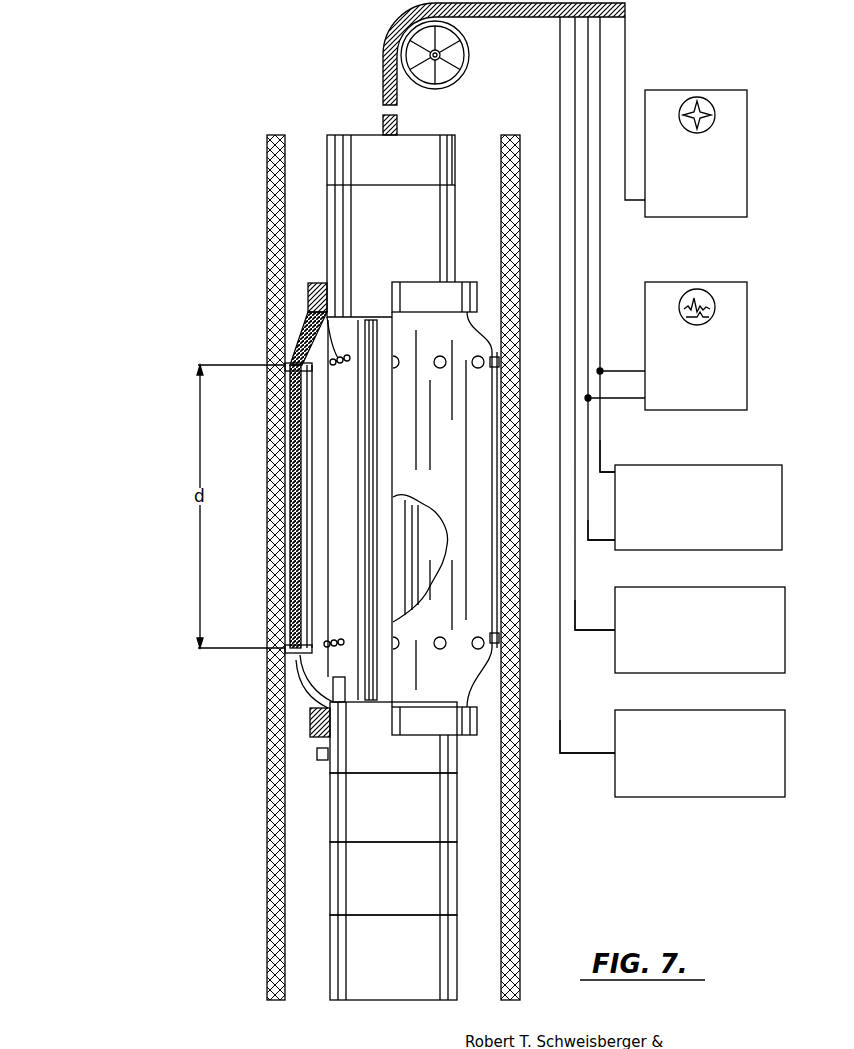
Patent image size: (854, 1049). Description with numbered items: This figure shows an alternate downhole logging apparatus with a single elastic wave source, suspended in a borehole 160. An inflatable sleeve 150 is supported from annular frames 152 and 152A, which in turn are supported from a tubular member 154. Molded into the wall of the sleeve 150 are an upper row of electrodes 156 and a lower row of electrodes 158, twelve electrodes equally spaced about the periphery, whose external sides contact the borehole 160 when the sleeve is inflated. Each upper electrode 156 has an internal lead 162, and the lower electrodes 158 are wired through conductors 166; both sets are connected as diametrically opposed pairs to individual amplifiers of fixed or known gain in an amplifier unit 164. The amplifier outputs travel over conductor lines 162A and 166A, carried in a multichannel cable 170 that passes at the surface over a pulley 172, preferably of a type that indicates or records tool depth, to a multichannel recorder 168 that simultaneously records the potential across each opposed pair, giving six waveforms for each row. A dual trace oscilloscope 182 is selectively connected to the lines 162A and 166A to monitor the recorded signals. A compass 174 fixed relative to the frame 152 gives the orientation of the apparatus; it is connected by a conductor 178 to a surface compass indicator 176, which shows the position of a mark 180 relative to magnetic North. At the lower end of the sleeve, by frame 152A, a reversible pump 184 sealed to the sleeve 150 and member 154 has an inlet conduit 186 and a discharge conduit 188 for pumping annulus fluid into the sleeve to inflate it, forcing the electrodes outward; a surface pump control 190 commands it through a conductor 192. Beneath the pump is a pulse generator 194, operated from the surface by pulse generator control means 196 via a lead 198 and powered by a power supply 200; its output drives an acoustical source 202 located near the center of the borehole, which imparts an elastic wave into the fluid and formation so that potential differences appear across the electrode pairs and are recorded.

The inflatable sleeve 150 is at (290, 345).
The annular frame 152 is at (312, 284).
The annular frame 152A is at (310, 723).
The tubular member 154 is at (418, 562).
The upper row of electrodes 156 is at (292, 364).
The lower row of electrodes 158 is at (288, 649).
The borehole 160 is at (278, 136).
The internal lead 162 is at (331, 353).
The conductor line 162A is at (602, 468).
The amplifier unit 164 is at (327, 213).
The conductor 166 is at (358, 612).
The conductor line 166A is at (595, 543).
The multichannel recorder 168 is at (742, 466).
The multichannel cable 170 is at (400, 22).
The pulley 172 is at (470, 40).
The compass 174 is at (368, 135).
The compass indicator 176 is at (723, 174).
The conductor 178 is at (626, 43).
The mark 180 is at (694, 124).
The dual trace oscilloscope 182 is at (745, 282).
The pump 184 is at (330, 766).
The inlet conduit 186 is at (316, 755).
The discharge conduit 188 is at (338, 677).
The pump control 190 is at (733, 711).
The conductor 192 is at (597, 757).
The pulse generator 194 is at (330, 864).
The pulse generator control means 196 is at (734, 588).
The lead 198 is at (608, 634).
The power supply 200 is at (348, 1000).
The acoustical source 202 is at (458, 800).